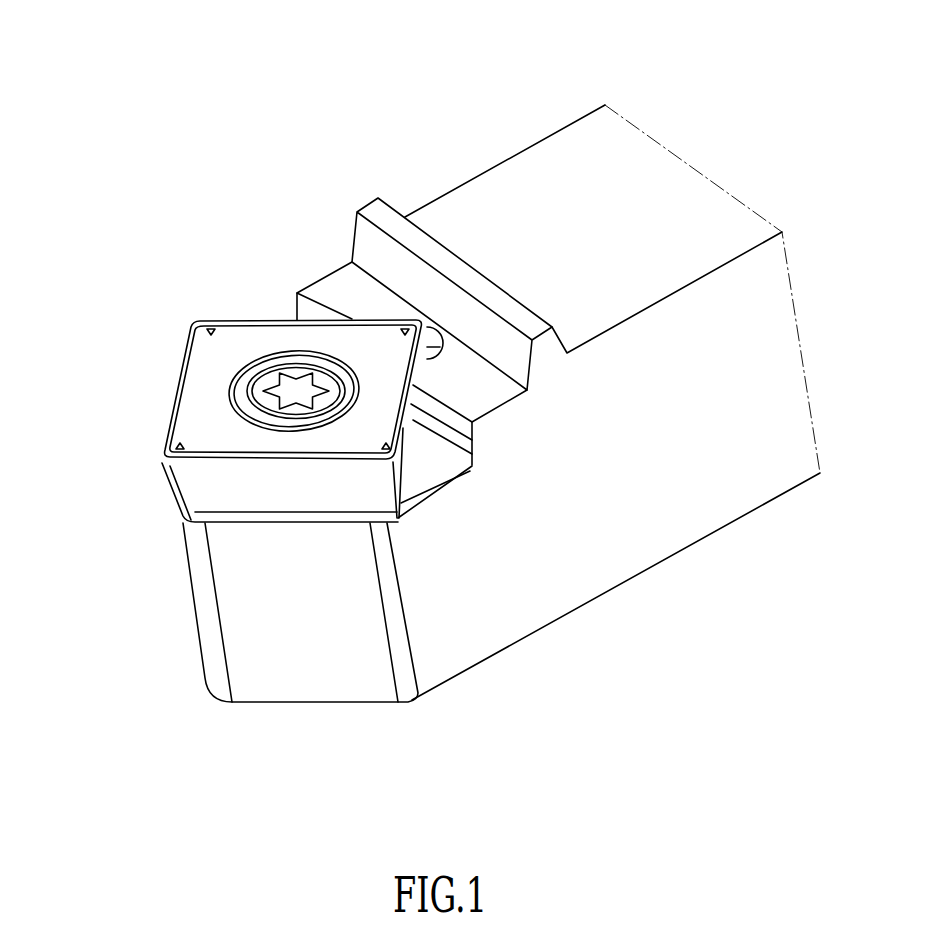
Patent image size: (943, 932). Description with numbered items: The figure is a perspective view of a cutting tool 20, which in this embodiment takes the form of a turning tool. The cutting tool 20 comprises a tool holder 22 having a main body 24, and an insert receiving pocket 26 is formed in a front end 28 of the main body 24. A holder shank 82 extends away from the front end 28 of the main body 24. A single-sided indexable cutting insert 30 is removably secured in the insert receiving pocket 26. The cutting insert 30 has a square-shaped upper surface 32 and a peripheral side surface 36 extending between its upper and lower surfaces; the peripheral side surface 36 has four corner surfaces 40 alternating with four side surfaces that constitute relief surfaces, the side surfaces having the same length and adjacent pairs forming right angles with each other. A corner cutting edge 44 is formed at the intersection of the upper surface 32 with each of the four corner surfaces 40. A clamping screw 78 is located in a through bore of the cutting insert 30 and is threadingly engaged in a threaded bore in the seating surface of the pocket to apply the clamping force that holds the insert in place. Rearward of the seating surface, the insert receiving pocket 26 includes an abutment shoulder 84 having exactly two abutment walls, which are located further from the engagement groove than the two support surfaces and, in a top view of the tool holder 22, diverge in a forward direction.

The cutting tool 20 is at (397, 103).
The tool holder 22 is at (501, 447).
The main body 24 is at (569, 190).
The holder shank 82 is at (682, 206).
The abutment shoulder 84 is at (339, 310).
The insert receiving pocket 26 is at (424, 452).
The front end 28 is at (293, 640).
The cutting insert 30 is at (243, 405).
The upper surface 32 is at (201, 413).
The clamping screw 78 is at (289, 388).
The corner cutting edge 44 is at (167, 467).
The corner surface 40 is at (177, 485).
The peripheral side surface 36 is at (240, 491).